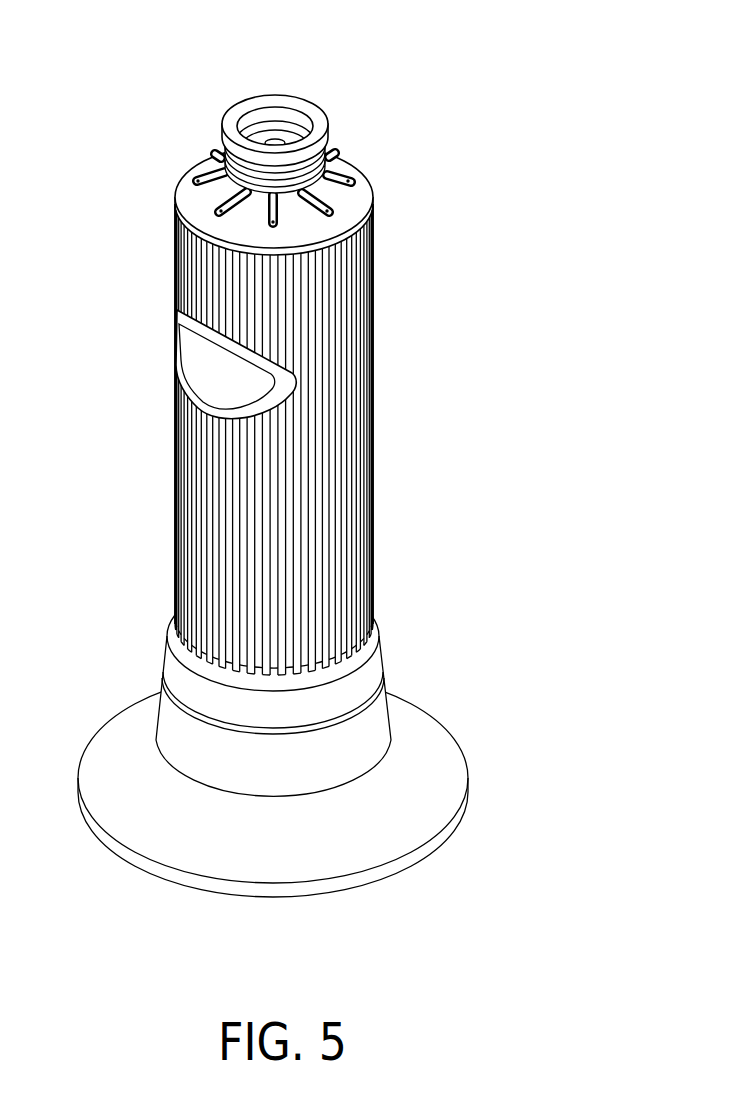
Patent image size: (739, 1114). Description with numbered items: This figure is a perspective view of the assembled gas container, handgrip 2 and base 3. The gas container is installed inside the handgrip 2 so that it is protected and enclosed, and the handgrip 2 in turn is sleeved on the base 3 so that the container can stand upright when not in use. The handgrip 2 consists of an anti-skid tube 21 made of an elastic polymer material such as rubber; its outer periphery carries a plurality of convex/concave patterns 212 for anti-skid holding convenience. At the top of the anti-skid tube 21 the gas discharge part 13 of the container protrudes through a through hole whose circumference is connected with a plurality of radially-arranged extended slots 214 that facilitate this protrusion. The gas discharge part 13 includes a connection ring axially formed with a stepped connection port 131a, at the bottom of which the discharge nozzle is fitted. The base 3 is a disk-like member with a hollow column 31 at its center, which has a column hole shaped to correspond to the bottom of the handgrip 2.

The handgrip 2 is at (365, 435).
The base 3 is at (321, 739).
The gas discharge part 13 is at (326, 96).
The connection port 131a is at (278, 115).
The anti-skid tube 21 is at (370, 672).
The hollow column 31 is at (165, 712).
The convex/concave patterns 212 is at (372, 357).
The extended slots 214 is at (338, 172).